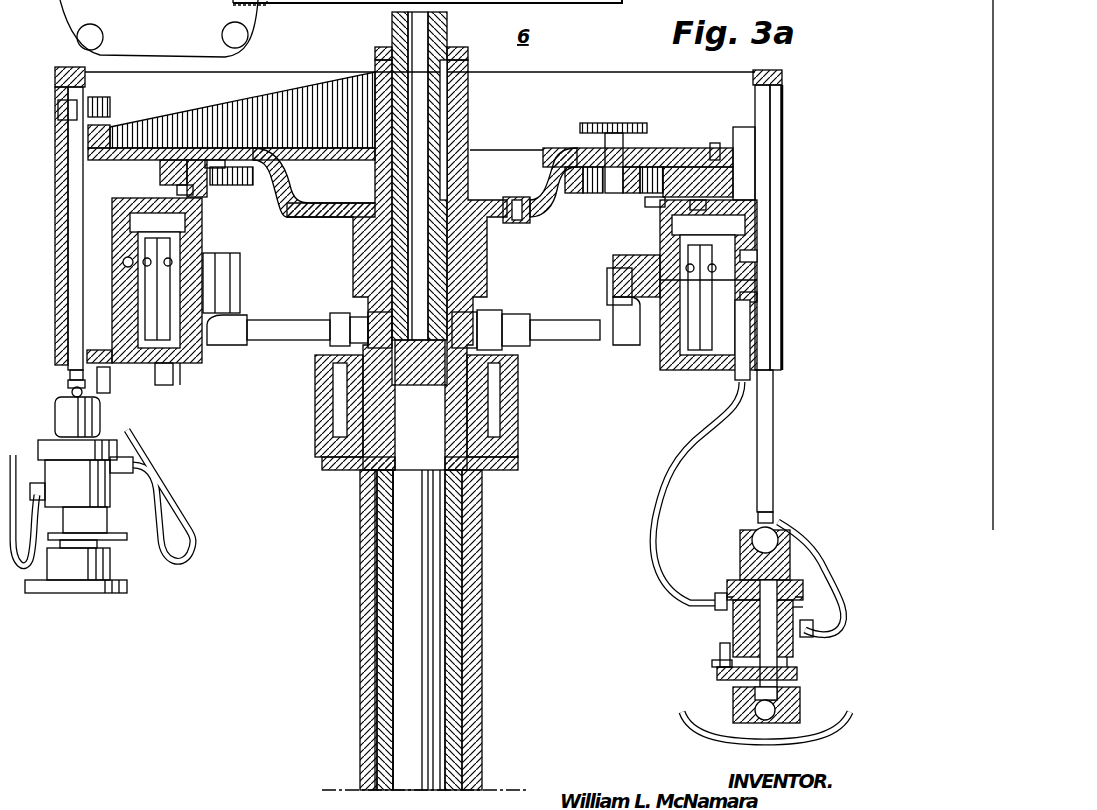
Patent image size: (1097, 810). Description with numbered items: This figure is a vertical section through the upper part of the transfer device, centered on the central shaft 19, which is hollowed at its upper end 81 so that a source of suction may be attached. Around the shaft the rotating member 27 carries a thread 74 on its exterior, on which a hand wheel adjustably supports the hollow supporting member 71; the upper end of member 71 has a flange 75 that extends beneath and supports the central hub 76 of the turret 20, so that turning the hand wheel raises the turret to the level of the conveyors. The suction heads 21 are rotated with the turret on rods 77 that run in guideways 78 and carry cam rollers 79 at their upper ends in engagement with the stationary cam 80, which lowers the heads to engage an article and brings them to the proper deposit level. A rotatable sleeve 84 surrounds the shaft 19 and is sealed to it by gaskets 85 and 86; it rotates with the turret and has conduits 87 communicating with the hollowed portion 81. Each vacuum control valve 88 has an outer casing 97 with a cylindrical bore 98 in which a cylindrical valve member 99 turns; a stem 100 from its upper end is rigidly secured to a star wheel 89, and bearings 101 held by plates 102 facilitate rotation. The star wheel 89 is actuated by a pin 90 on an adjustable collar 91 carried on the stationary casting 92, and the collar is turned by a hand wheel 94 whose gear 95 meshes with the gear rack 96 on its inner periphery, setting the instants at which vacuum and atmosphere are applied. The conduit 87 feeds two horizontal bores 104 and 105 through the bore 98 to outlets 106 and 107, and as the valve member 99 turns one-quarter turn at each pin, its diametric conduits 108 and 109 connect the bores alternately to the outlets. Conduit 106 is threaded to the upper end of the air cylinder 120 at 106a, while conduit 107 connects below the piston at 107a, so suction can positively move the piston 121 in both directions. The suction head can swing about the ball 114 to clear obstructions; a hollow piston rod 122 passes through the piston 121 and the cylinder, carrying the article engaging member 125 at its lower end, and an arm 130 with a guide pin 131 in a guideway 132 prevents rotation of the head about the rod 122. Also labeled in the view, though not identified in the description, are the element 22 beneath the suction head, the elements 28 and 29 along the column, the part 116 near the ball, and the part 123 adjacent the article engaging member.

The central shaft 19 is at (403, 733).
The turret 20 is at (278, 387).
The suction head 21 is at (130, 572).
The dish 22 is at (687, 723).
The member 27 is at (366, 641).
The column 28 is at (383, 463).
The sleeve 29 is at (368, 551).
The hollow supporting member 71 is at (361, 582).
The thread 74 is at (467, 683).
The flange 75 is at (518, 463).
The central hub 76 is at (315, 420).
The rod 77 is at (72, 200).
The guideway 78 is at (62, 293).
The cam roller 79 is at (102, 96).
The stationary cam 80 is at (118, 130).
The hollowed upper end 81 is at (432, 42).
The rotatable sleeve 84 is at (470, 306).
The gasket 85 is at (373, 413).
The gasket 86 is at (385, 262).
The vacuum conduit 87 is at (285, 320).
The vacuum control valve 88 is at (253, 262).
The star wheel 89 is at (117, 200).
The pin 90 is at (225, 172).
The adjustable collar 91 is at (185, 170).
The stationary casting 92 is at (337, 202).
The hand wheel 94 is at (587, 123).
The gear 95 is at (590, 193).
The gear rack 96 is at (220, 160).
The outer casing 97 is at (215, 315).
The cylindrical bore 98 is at (147, 323).
The valve member 99 is at (147, 330).
The stem 100 is at (153, 197).
The bearing 101 is at (175, 228).
The plate 102 is at (198, 240).
The horizontal bore 104 is at (648, 290).
The horizontal bore 105 is at (608, 264).
The outlet 106 is at (110, 378).
The threaded connection 106a is at (140, 467).
The outlet 107 is at (122, 263).
The bottom connection 107a is at (45, 500).
The diametric conduit 108 is at (757, 298).
The diametric conduit 109 is at (757, 280).
The ball 114 is at (67, 397).
The ball joint 116 is at (740, 547).
The air cylinder 120 is at (733, 612).
The piston 121 is at (793, 607).
The hollow piston rod 122 is at (787, 663).
The cup 123 is at (797, 690).
The article engaging member 125 is at (800, 703).
The arm 130 is at (722, 678).
The guide pin 131 is at (720, 665).
The guideway 132 is at (720, 652).